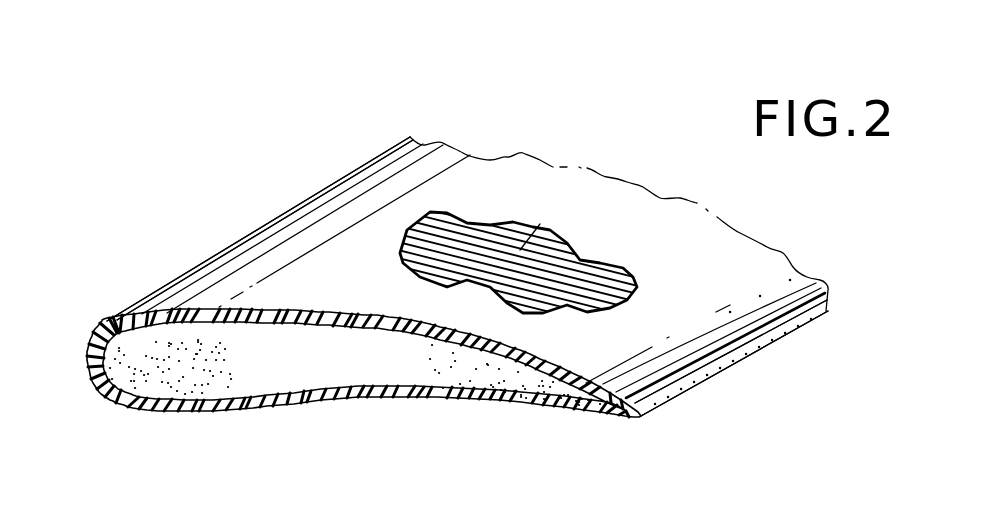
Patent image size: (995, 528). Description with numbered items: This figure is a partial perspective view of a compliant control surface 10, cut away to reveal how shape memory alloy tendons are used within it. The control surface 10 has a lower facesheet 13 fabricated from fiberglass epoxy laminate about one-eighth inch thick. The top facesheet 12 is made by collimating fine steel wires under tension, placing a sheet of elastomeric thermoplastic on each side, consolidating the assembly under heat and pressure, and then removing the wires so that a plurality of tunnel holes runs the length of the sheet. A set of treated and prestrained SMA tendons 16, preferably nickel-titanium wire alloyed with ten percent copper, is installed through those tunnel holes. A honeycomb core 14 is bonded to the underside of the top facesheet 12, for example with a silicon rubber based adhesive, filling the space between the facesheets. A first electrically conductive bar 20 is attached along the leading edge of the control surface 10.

The control surface 10 is at (221, 204).
The top facesheet 12 is at (777, 267).
The lower facesheet 13 is at (424, 394).
The honeycomb core 14 is at (158, 389).
The SMA tendons 16 is at (540, 224).
The first electrically conductive bar 20 is at (352, 176).